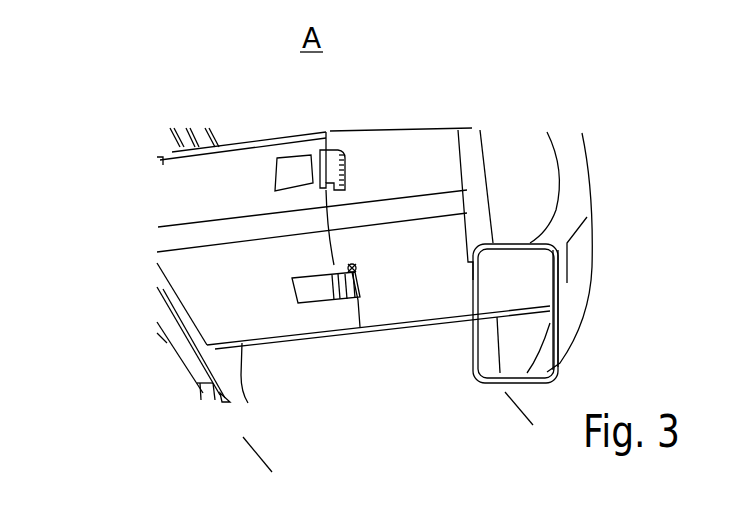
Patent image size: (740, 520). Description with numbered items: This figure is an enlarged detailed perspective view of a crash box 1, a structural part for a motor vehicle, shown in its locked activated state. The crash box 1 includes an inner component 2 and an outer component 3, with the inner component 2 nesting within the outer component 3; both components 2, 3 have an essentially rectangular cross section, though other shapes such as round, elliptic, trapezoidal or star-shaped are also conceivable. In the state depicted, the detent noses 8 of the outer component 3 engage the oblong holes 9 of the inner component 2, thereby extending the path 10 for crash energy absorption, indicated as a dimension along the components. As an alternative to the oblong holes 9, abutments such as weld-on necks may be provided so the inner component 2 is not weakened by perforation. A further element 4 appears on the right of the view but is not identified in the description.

The crash box 1 is at (113, 93).
The inner component 2 is at (402, 168).
The outer component 3 is at (238, 168).
The frame 4 is at (578, 187).
The detent noses 8 is at (347, 289).
The oblong holes 9 is at (352, 268).
The path 10 is at (517, 407).